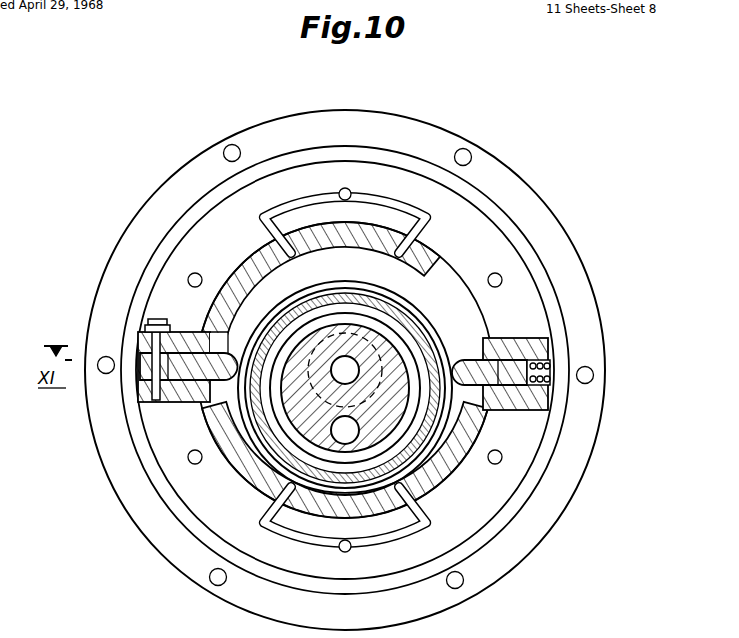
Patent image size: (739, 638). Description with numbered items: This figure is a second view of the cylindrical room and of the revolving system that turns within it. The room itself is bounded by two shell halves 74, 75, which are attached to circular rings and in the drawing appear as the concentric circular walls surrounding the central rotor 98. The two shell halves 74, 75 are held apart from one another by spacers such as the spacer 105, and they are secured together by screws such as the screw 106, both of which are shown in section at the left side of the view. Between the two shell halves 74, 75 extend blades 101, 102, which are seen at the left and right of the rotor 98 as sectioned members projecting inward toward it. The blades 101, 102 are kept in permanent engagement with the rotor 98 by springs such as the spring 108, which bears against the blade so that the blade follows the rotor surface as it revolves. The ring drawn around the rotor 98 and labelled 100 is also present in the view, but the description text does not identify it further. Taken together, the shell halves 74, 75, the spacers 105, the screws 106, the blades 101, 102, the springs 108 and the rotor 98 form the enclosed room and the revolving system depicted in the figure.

The shell half 74 is at (467, 315).
The shell half 75 is at (395, 530).
The rotor 98 is at (257, 435).
The sectioned ring 100 is at (430, 497).
The blade 101 is at (155, 400).
The blade 102 is at (538, 410).
The spacer 105 is at (157, 380).
The screw 106 is at (148, 322).
The spring 108 is at (551, 373).